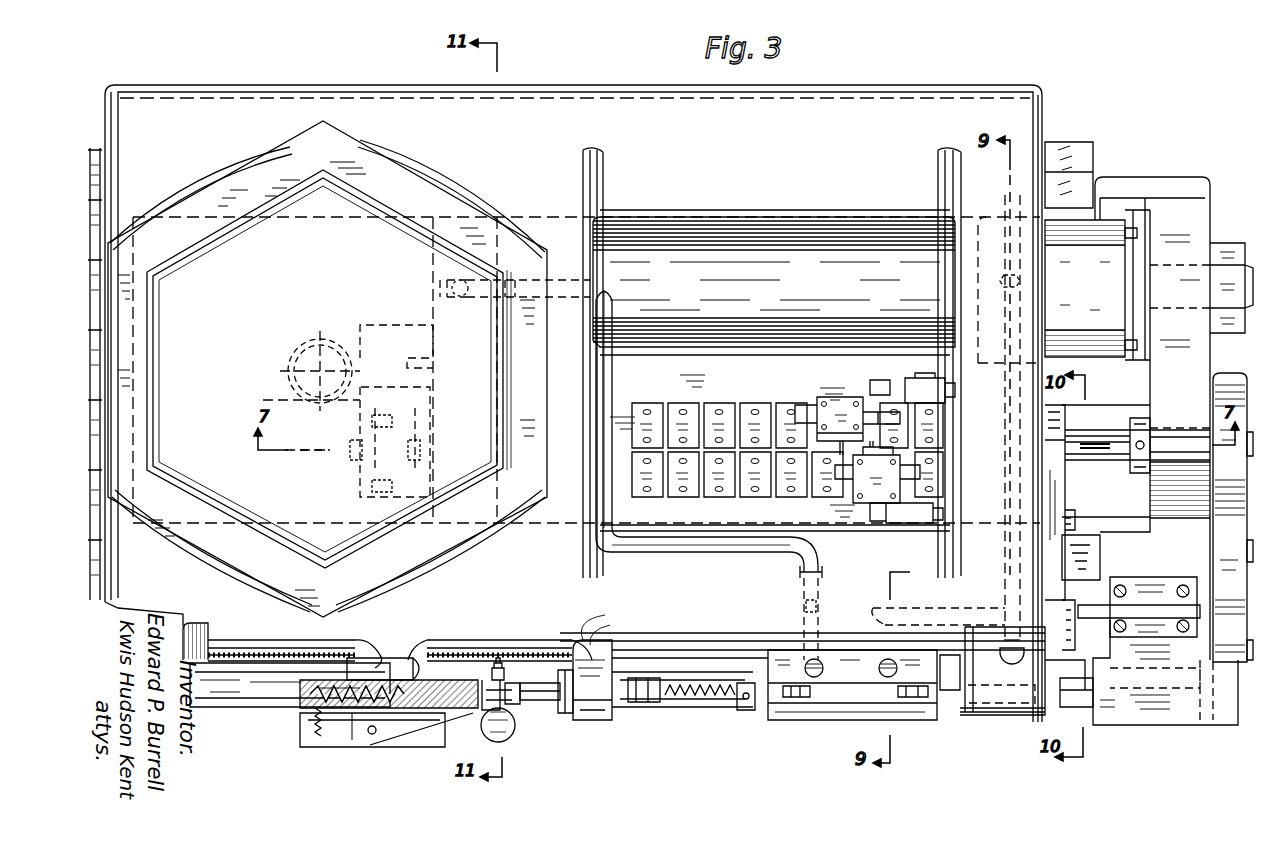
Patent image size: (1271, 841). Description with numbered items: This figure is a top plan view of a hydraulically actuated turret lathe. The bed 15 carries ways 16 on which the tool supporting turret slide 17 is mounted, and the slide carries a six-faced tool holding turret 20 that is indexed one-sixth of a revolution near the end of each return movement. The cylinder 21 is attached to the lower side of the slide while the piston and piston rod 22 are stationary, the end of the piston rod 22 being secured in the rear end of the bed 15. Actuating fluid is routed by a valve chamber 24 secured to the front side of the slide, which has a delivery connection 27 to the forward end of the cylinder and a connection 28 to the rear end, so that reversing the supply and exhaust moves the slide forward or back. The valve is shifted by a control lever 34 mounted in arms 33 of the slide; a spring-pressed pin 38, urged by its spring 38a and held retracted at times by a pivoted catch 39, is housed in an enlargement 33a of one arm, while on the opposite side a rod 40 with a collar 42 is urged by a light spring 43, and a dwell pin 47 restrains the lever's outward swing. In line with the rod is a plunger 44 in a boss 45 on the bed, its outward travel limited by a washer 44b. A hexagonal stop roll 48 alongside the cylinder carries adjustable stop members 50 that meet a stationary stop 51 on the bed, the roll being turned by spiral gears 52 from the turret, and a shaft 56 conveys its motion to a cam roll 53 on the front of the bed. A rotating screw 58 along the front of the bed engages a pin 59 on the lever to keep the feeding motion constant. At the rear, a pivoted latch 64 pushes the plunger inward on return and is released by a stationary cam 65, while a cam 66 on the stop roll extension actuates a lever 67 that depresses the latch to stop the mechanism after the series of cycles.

The bed 15 is at (1143, 183).
The ways 16 is at (1108, 108).
The turret slide 17 is at (867, 110).
The tool holding turret 20 is at (285, 157).
The cylinder 21 is at (774, 282).
The piston rod 22 is at (1138, 272).
The valve chamber 24 is at (836, 708).
The delivery connection 27 is at (808, 610).
The delivery connection 28 is at (1005, 540).
The arms 33 is at (655, 608).
The enlargement 33a is at (300, 716).
The control lever 34 is at (511, 737).
The spring-pressed pin 38 is at (455, 672).
The spring 38a is at (358, 716).
The pivoted catch 39 is at (411, 732).
The rod 40 is at (530, 702).
The collar 42 is at (745, 711).
The light spring 43 is at (686, 706).
The plunger 44 is at (1078, 697).
The washer 44b is at (1237, 692).
The boss 45 is at (1098, 702).
The dwell pin 47 is at (525, 666).
The stop roll 48 is at (718, 412).
The stop member 50 is at (858, 372).
The stationary stop 51 is at (314, 356).
The spiral gears 52 is at (372, 435).
The cam roll 53 is at (265, 682).
The shaft 56 is at (1097, 440).
The rotating screw 58 is at (205, 633).
The pin 59 is at (505, 662).
The pivoted latch 64 is at (1055, 690).
The stationary cam 65 is at (1115, 604).
The cam 66 is at (1062, 412).
The lever 67 is at (1057, 507).